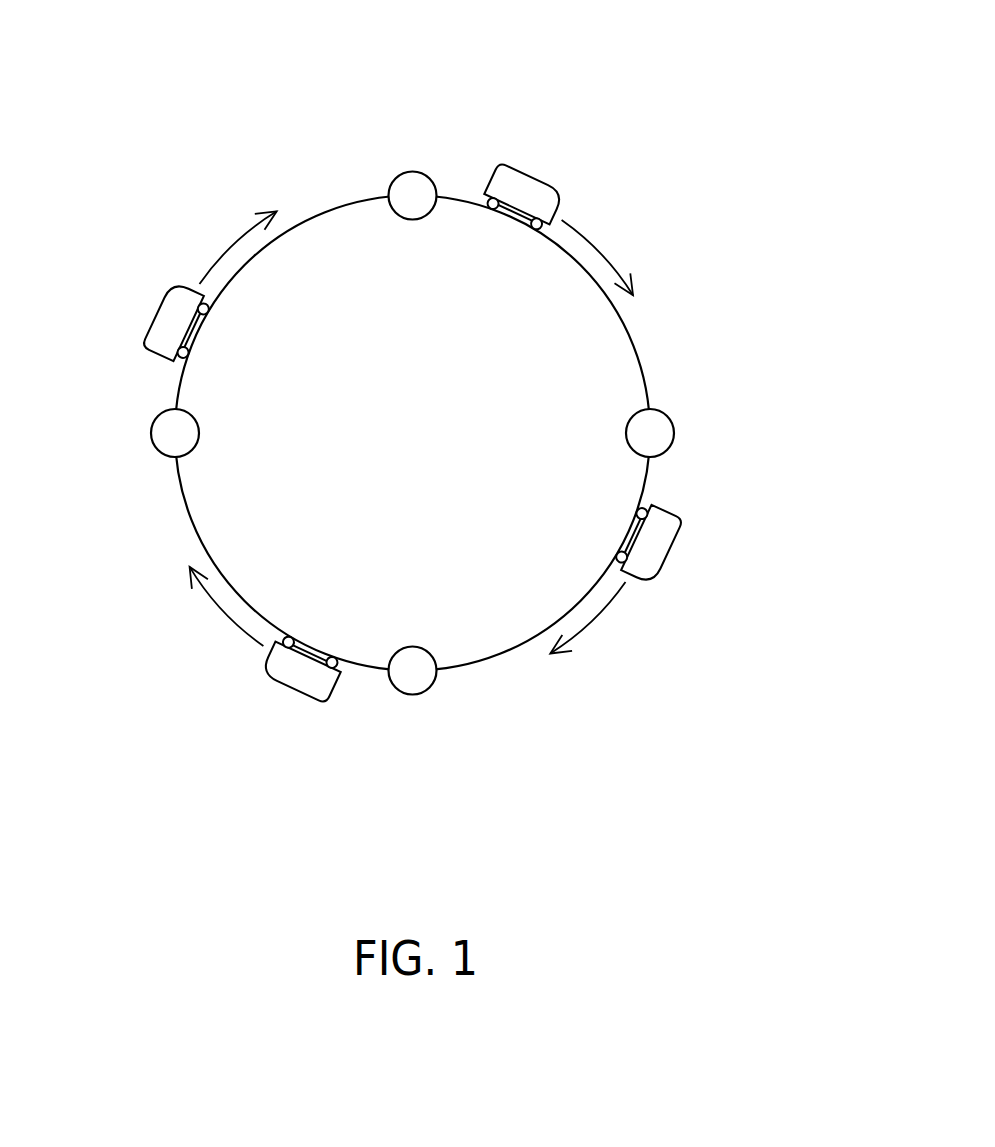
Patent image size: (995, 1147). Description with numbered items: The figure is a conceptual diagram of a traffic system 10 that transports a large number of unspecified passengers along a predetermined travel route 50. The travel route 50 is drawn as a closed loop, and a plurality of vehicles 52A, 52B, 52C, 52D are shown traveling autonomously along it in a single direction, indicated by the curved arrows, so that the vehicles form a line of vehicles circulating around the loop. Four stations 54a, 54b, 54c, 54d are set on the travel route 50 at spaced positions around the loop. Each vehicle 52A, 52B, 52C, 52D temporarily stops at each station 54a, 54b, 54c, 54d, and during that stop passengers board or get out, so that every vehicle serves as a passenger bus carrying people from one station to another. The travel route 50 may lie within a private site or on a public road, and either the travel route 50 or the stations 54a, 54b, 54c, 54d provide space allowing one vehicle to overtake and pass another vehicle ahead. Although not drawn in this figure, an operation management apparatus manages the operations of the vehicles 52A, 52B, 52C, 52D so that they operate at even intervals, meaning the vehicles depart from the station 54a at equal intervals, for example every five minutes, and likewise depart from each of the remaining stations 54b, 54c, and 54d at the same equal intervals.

The traffic system 10 is at (602, 105).
The travel route 50 is at (340, 200).
The vehicle 52A is at (152, 316).
The vehicle 52B is at (538, 175).
The vehicle 52C is at (678, 545).
The vehicle 52D is at (283, 688).
The station 54a is at (153, 420).
The station 54b is at (432, 176).
The station 54c is at (675, 433).
The station 54d is at (394, 690).